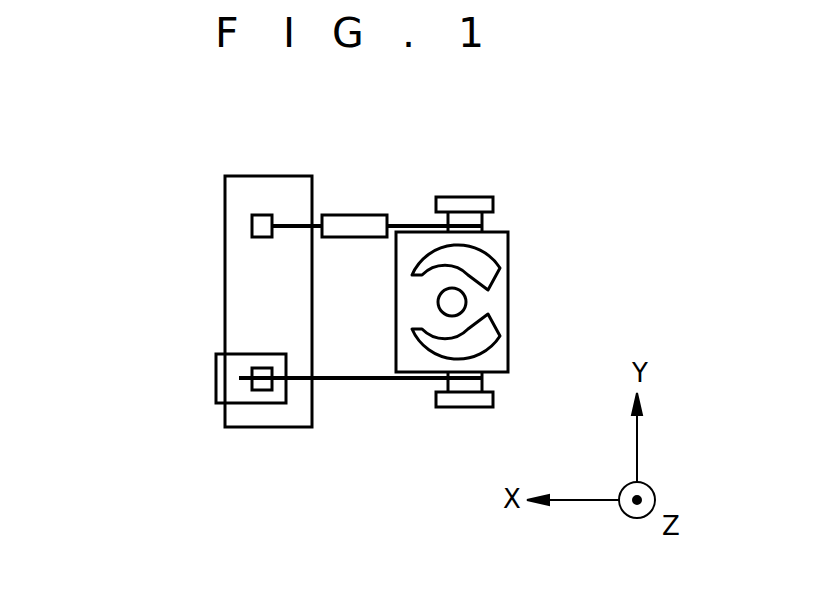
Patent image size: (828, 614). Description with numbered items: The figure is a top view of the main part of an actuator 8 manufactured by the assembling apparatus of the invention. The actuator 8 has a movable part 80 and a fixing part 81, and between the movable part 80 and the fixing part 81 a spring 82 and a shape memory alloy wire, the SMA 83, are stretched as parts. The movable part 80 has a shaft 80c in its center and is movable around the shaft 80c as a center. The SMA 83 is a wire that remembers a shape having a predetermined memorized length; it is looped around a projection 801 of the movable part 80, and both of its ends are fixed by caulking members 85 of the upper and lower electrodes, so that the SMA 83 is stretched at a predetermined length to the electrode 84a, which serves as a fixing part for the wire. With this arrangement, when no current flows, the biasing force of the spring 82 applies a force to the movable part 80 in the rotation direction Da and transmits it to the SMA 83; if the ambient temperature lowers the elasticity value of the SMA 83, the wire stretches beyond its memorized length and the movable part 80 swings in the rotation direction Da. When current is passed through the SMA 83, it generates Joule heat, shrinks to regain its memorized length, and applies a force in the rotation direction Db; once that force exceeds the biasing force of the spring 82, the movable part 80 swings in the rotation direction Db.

The actuator 8 is at (103, 151).
The fixing part 81 is at (272, 176).
The spring 82 is at (356, 215).
The shape memory alloy (SMA) 83 is at (362, 380).
The electrode 84a is at (216, 378).
The caulking member 85 is at (262, 391).
The movable part 80 is at (508, 286).
The shaft 80c is at (473, 303).
The projection 801 is at (465, 197).
The rotation direction Da is at (508, 347).
The rotation direction Db is at (508, 256).